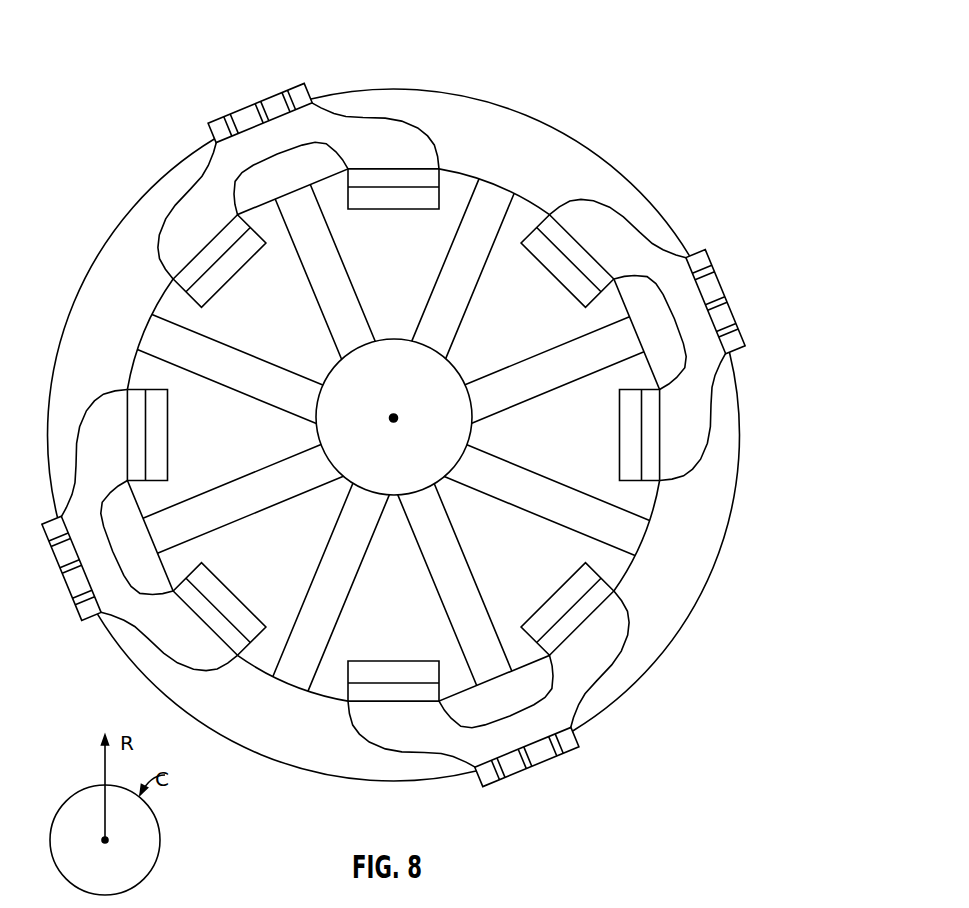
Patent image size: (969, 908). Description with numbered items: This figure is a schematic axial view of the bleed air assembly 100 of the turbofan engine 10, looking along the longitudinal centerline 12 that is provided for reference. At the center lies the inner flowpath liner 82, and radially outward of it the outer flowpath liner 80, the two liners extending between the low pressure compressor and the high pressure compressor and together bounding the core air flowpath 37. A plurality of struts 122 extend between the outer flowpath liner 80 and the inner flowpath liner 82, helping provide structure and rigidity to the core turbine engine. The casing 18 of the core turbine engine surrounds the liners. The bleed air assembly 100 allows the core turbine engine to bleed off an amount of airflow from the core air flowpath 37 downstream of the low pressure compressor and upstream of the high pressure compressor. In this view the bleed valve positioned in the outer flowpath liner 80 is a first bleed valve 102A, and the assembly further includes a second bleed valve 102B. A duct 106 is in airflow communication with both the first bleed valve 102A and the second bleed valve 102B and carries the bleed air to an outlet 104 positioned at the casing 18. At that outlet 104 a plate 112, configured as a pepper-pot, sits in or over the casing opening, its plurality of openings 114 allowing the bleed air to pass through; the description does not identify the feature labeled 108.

The turbofan engine 10 is at (558, 78).
The longitudinal centerline 12 is at (396, 416).
The casing 18 is at (471, 92).
The core air flowpath 37 is at (405, 280).
The outer flowpath liner 80 is at (574, 190).
The inner flowpath liner 82 is at (482, 432).
The bleed air assembly 100 is at (200, 170).
The first bleed valve 102A is at (582, 243).
The second bleed valve 102B is at (670, 426).
The outlet 104 is at (744, 326).
The duct 106 is at (654, 255).
The slot 108 is at (562, 289).
The plate 112 is at (746, 349).
The openings 114 is at (734, 296).
The struts 122 is at (475, 215).